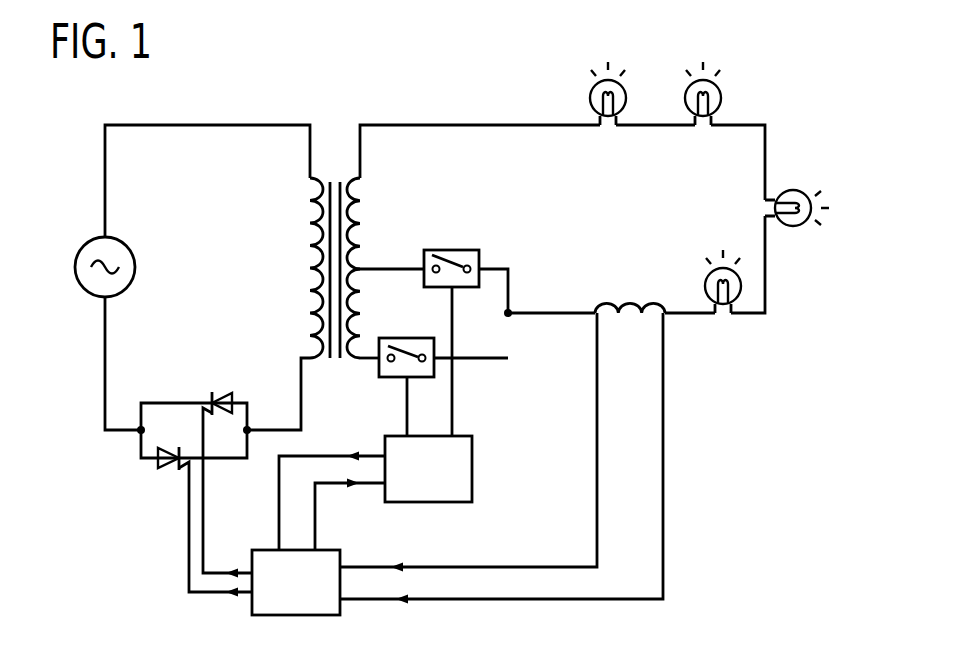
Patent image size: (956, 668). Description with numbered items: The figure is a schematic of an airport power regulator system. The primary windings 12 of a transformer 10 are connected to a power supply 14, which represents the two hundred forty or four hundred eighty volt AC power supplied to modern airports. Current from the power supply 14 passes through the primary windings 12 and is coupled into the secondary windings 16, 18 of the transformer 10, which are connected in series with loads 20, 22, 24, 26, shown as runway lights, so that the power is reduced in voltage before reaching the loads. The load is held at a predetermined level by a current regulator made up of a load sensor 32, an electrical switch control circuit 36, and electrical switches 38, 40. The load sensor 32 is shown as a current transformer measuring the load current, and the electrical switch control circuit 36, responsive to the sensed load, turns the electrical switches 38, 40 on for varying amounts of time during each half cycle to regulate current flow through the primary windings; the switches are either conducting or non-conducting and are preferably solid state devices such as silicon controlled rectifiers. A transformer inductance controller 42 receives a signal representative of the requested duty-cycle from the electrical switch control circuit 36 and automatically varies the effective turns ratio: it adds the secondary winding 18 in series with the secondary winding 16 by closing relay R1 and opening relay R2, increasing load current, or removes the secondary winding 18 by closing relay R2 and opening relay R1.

The transformer 10 is at (339, 126).
The primary windings 12 is at (308, 262).
The power supply 14 is at (85, 248).
The secondary winding 16 is at (362, 248).
The secondary winding 18 is at (364, 299).
The load 20 is at (590, 90).
The load 22 is at (722, 90).
The load 24 is at (798, 191).
The load 26 is at (720, 268).
The load sensor 32 is at (624, 303).
The electrical switch control circuit 36 is at (309, 597).
The electrical switch 38 is at (219, 394).
The electrical switch 40 is at (170, 465).
The transformer inductance controller 42 is at (442, 482).
The relay R1 is at (378, 372).
The relay R2 is at (458, 250).